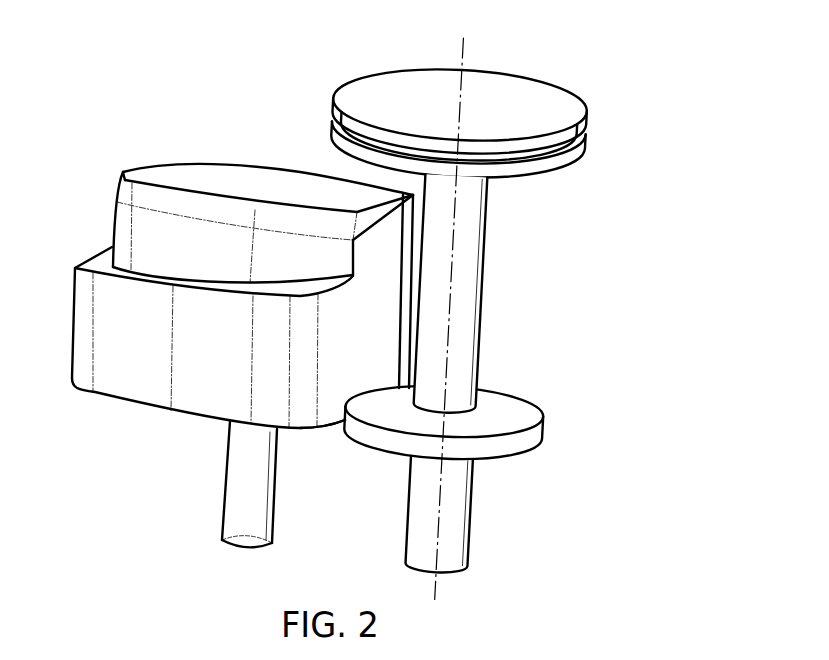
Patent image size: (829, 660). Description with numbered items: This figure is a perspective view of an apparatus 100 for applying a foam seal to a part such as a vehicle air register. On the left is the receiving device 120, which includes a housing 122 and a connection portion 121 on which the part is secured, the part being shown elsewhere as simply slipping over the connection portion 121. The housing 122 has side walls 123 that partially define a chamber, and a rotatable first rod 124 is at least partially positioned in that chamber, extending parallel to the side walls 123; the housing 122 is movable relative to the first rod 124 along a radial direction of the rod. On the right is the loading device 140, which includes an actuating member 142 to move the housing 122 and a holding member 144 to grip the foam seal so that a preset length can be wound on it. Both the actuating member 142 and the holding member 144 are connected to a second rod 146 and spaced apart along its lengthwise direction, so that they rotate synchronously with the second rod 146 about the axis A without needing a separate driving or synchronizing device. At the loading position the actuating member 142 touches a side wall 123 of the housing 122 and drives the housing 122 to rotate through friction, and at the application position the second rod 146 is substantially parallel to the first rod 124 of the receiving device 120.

The apparatus 100 is at (606, 32).
The receiving device 120 is at (111, 401).
The connection portion 121 is at (143, 224).
The housing 122 is at (90, 327).
The side walls 123 is at (330, 403).
The first rod 124 is at (232, 513).
The loading device 140 is at (476, 482).
The actuating member 142 is at (512, 407).
The holding member 144 is at (523, 92).
The second rod 146 is at (468, 273).